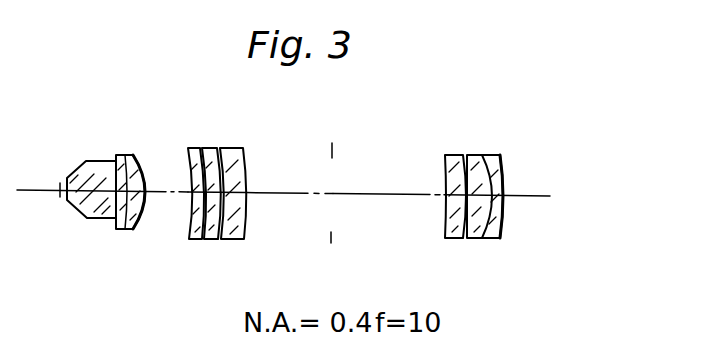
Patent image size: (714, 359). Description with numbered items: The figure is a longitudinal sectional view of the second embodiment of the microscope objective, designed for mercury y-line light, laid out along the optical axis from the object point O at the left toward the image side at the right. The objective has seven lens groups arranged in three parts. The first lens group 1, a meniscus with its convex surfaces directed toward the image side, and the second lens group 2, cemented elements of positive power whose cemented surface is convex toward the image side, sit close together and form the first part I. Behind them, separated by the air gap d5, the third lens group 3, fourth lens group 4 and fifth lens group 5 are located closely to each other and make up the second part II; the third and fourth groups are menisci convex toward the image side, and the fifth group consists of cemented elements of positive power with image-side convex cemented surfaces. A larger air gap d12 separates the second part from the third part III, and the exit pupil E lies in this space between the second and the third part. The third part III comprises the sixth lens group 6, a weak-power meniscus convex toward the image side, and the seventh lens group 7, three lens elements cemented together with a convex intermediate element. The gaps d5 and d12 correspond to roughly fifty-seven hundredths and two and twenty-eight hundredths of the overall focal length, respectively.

The first lens group 1 is at (91, 161).
The second lens group 2 is at (130, 166).
The third lens group 3 is at (190, 173).
The fourth lens group 4 is at (210, 173).
The fifth lens group 5 is at (233, 173).
The sixth lens group 6 is at (455, 174).
The seventh lens group 7 is at (485, 174).
The first part of the objective I is at (69, 100).
The second part of the objective II is at (257, 101).
The third part of the objective III is at (437, 102).
The object point O is at (57, 192).
The exit pupil E is at (332, 195).
The air gap between the first and second part d5 is at (163, 197).
The air gap between the second and third part d12 is at (272, 193).